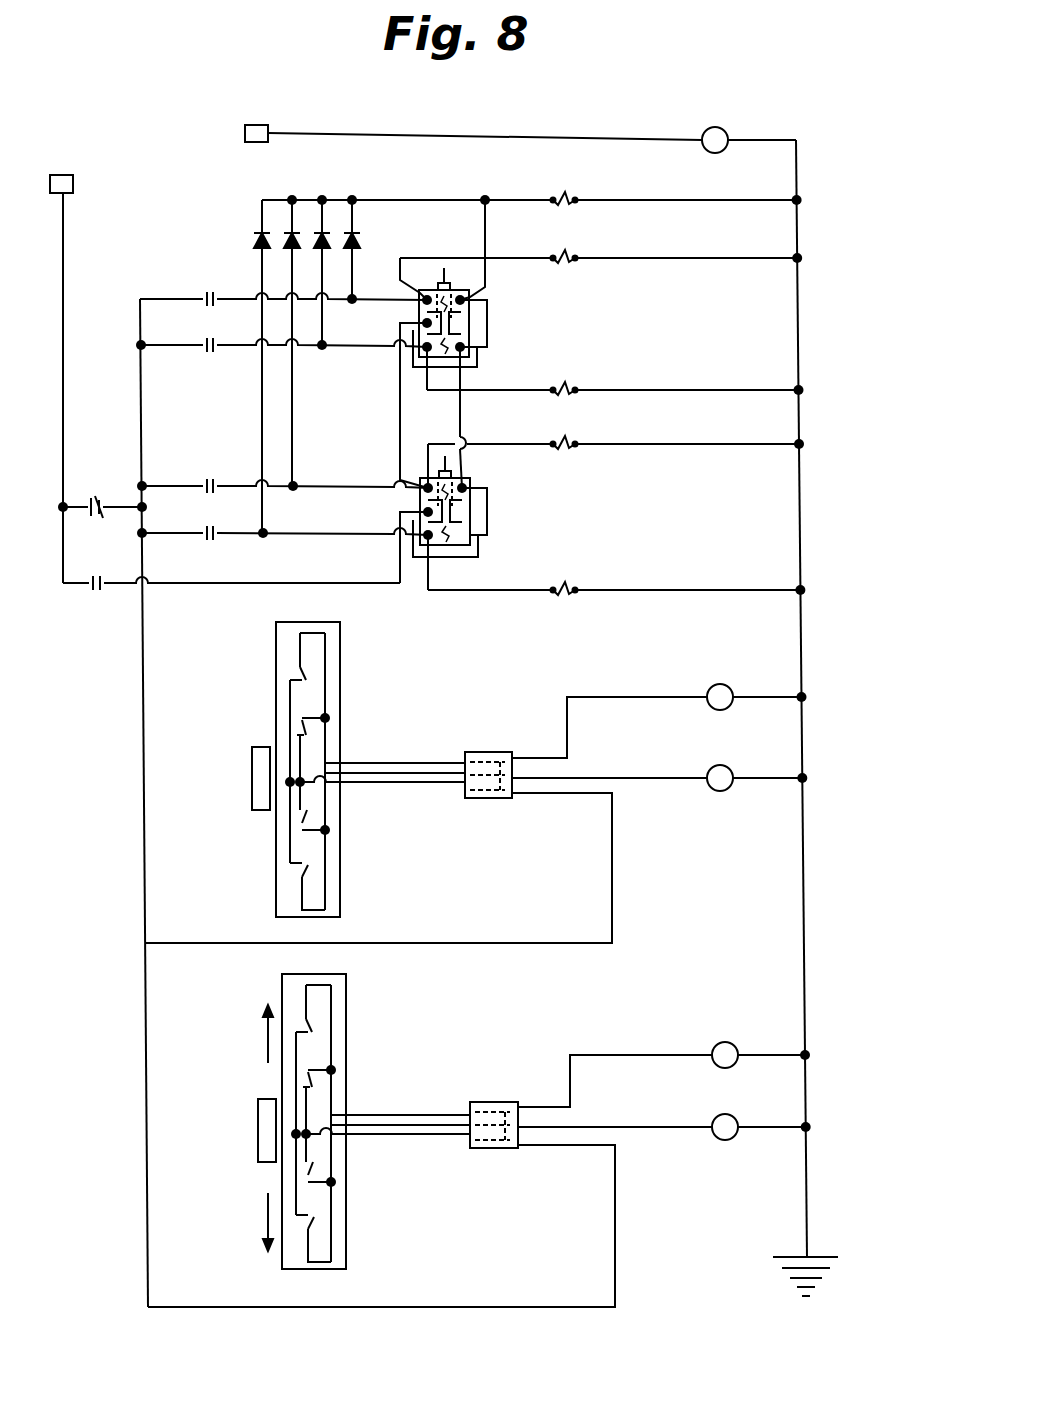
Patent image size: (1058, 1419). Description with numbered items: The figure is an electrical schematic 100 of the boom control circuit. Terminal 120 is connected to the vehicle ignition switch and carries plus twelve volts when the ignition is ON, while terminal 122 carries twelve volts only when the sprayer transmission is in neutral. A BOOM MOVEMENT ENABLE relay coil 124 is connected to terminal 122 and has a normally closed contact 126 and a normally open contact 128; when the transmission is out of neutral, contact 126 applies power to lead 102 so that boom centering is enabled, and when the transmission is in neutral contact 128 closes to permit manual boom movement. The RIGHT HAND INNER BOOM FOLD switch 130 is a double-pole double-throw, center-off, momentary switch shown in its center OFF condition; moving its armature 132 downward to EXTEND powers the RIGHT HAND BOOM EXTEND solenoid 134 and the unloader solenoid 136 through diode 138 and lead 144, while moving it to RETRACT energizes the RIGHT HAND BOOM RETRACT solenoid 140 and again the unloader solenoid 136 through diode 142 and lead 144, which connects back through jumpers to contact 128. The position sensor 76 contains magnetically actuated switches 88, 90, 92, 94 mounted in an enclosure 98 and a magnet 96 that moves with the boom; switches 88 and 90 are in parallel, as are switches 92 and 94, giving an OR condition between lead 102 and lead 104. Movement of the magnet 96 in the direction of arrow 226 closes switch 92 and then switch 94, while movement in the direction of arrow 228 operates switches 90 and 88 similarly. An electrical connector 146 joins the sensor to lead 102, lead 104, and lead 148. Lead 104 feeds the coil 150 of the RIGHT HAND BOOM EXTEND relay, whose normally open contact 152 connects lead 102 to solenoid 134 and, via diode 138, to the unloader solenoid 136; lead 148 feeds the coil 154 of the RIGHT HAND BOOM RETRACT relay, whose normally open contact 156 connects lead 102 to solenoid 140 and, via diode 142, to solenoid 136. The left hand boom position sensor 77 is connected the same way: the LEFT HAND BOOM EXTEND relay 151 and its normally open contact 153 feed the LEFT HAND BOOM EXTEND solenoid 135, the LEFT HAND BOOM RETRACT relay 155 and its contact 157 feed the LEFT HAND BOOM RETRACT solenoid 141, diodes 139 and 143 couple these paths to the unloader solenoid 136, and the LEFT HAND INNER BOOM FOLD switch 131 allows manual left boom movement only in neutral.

The electrical schematic 100 is at (664, 120).
The lead 102 is at (148, 708).
The lead 104 is at (670, 1128).
The terminal 120 is at (73, 176).
The terminal 122 is at (245, 135).
The BOOM MOVEMENT ENABLE relay coil 124 is at (727, 127).
The normally closed contact 126 is at (118, 462).
The normally open contact 128 is at (100, 590).
The RIGHT HAND INNER BOOM FOLD switch 130 is at (478, 517).
The LEFT HAND INNER BOOM FOLD switch 131 is at (470, 335).
The armature 132 is at (458, 512).
The RIGHT HAND BOOM EXTEND solenoid 134 is at (568, 589).
The LEFT HAND BOOM EXTEND solenoid 135 is at (573, 390).
The unloader solenoid 136 is at (559, 206).
The diode 138 is at (254, 238).
The diode 139 is at (320, 232).
The RIGHT HAND BOOM RETRACT solenoid 140 is at (568, 448).
The LEFT HAND BOOM RETRACT solenoid 141 is at (560, 264).
The diode 142 is at (288, 232).
The diode 143 is at (361, 243).
The lead 144 is at (488, 242).
The electrical connector 146 is at (497, 1102).
The lead 148 is at (673, 1055).
The coil of RIGHT HAND BOOM EXTEND relay 150 is at (728, 1116).
The LEFT HAND BOOM EXTEND relay 151 is at (710, 765).
The normally open contact 152 is at (217, 538).
The normally open contact 153 is at (215, 352).
The coil of RIGHT HAND BOOM RETRACT relay 154 is at (718, 1043).
The LEFT HAND BOOM RETRACT relay 155 is at (714, 684).
The normally open contact 156 is at (213, 485).
The normally open contact 157 is at (215, 305).
The position sensor 76 is at (316, 1122).
The position sensor 77 is at (265, 845).
The magnetically actuated switch 88 is at (316, 1224).
The magnetically actuated switch 90 is at (318, 1172).
The magnetically actuated switch 92 is at (318, 1083).
The magnetically actuated switch 94 is at (310, 1027).
The magnet 96 is at (253, 1145).
The enclosure 98 is at (348, 1034).
The arrow 226 is at (260, 1035).
The arrow 228 is at (260, 1210).